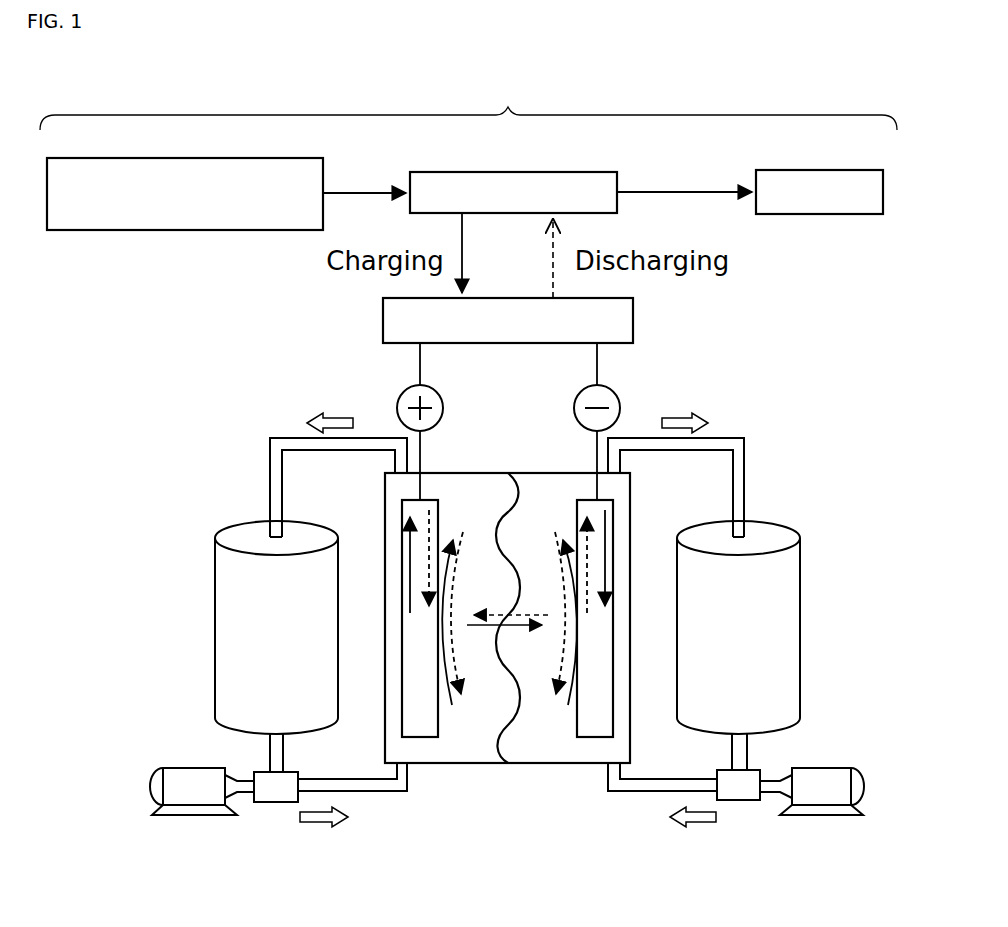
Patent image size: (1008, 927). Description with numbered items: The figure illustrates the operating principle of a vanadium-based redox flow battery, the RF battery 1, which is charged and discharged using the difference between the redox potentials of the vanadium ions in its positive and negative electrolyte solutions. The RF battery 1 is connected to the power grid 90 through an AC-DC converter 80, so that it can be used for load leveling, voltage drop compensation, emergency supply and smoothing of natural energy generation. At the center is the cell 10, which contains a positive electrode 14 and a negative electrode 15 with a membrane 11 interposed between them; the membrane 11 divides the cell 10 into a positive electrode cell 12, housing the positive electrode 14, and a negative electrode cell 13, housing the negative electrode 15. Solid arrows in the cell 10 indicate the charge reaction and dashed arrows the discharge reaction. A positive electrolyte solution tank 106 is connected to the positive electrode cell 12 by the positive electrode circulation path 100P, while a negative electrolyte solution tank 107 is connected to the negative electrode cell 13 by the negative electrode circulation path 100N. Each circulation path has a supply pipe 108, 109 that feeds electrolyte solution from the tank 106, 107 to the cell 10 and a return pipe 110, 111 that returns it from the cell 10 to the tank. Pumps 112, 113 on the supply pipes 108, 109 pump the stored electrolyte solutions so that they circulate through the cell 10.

The RF battery 1 is at (508, 595).
The cell 10 is at (508, 687).
The membrane 11 is at (510, 765).
The positive electrode cell 12 is at (447, 765).
The negative electrode cell 13 is at (565, 765).
The positive electrode 14 is at (386, 738).
The negative electrode 15 is at (630, 735).
The AC-DC converter 80 is at (633, 322).
The power grid 90 is at (468, 152).
The positive electrode circulation path 100P is at (271, 639).
The negative electrode circulation path 100N is at (744, 638).
The positive electrolyte solution tank 106 is at (232, 528).
The negative electrolyte solution tank 107 is at (782, 528).
The supply pipe 108 is at (372, 793).
The supply pipe 109 is at (643, 793).
The return pipe 110 is at (285, 437).
The return pipe 111 is at (728, 437).
The pump 112 is at (178, 762).
The pump 113 is at (838, 765).